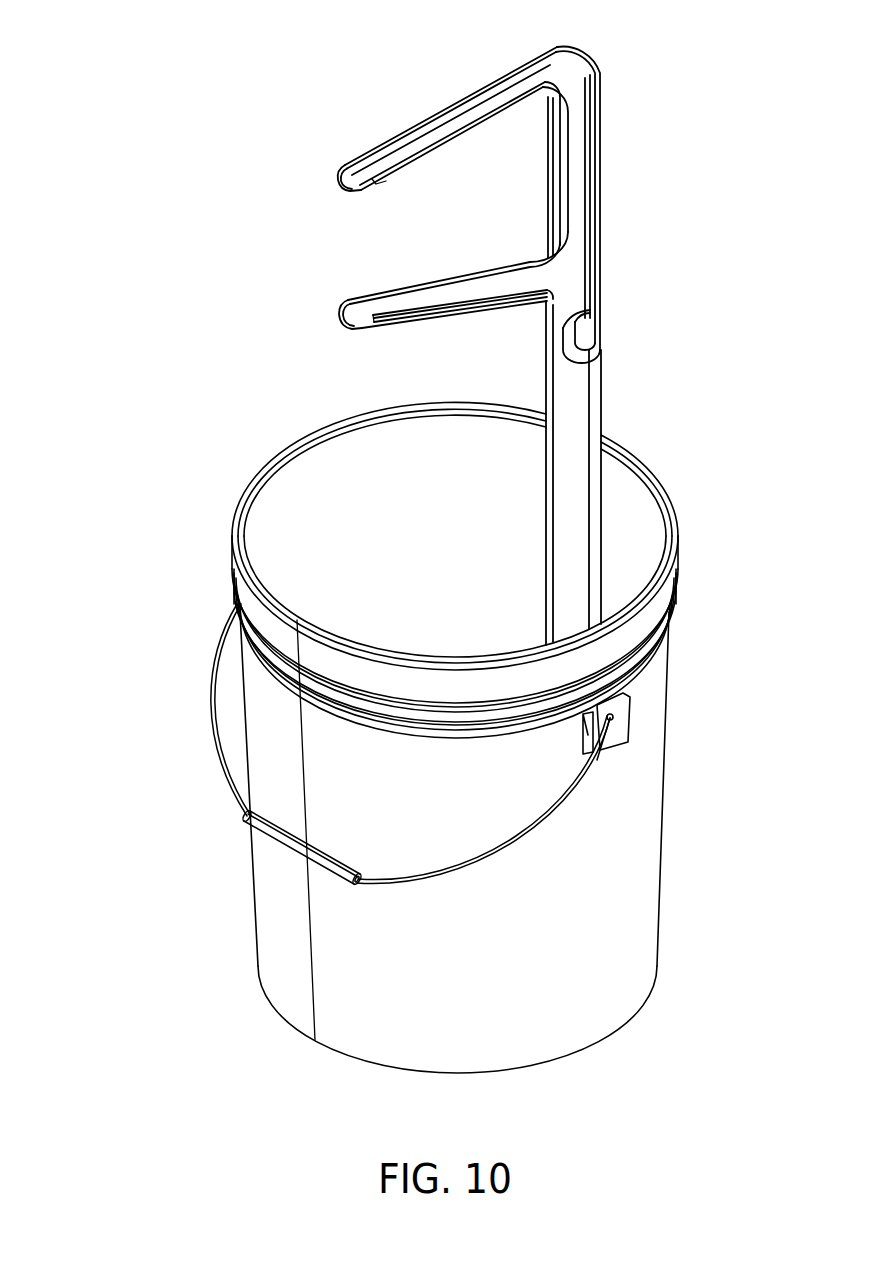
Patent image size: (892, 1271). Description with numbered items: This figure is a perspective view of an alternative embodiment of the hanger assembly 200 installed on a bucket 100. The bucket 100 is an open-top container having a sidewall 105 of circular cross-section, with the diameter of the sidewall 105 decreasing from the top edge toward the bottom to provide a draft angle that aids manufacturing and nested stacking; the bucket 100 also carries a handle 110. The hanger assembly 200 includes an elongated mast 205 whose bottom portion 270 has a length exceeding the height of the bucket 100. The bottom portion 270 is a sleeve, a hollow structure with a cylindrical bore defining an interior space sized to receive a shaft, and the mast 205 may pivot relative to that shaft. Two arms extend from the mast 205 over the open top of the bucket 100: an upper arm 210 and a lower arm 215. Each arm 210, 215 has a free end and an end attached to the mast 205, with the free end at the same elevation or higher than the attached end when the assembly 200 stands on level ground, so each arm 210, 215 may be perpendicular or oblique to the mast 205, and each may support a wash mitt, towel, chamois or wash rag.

The bucket 100 is at (434, 737).
The sidewall 105 is at (643, 938).
The handle 110 is at (277, 838).
The hanger assembly 200 is at (509, 346).
The mast 205 is at (600, 167).
The upper arm 210 is at (421, 122).
The lower arm 215 is at (404, 290).
The bottom portion 270 is at (604, 372).